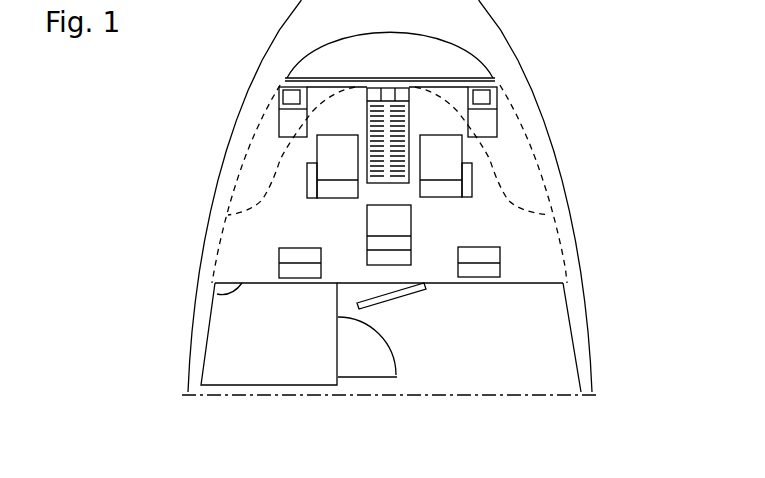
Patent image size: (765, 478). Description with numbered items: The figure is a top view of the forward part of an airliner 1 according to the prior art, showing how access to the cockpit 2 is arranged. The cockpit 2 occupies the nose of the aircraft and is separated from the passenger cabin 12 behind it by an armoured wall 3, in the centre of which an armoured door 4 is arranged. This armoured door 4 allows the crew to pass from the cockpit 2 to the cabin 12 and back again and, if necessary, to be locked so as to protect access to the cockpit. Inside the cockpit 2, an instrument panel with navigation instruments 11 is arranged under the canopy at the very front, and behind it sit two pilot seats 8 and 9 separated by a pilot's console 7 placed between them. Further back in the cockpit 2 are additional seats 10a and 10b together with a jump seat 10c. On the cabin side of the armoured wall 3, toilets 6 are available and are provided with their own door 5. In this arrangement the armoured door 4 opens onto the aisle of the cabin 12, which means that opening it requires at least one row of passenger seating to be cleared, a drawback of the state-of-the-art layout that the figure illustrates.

The airliner 1 is at (590, 58).
The cockpit 2 is at (559, 221).
The armoured wall 3 is at (217, 294).
The armoured door 4 is at (412, 292).
The door 5 is at (348, 386).
The toilets 6 is at (253, 350).
The pilot's console 7 is at (375, 185).
The pilot seat 8 is at (435, 169).
The pilot seat 9 is at (329, 169).
The seat 10a is at (279, 262).
The seat 10b is at (389, 235).
The jump seat 10c is at (500, 263).
The navigation instruments 11 is at (378, 61).
The passenger cabin 12 is at (541, 369).